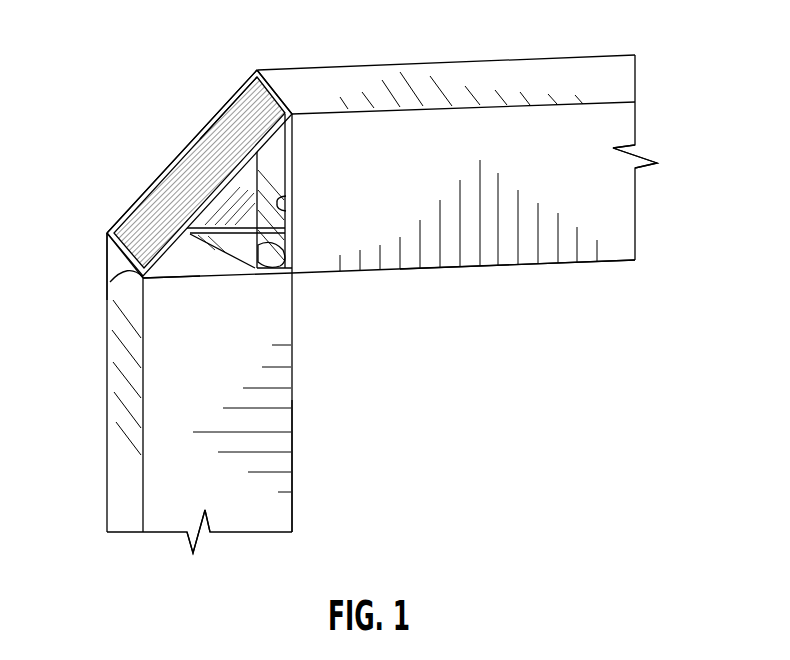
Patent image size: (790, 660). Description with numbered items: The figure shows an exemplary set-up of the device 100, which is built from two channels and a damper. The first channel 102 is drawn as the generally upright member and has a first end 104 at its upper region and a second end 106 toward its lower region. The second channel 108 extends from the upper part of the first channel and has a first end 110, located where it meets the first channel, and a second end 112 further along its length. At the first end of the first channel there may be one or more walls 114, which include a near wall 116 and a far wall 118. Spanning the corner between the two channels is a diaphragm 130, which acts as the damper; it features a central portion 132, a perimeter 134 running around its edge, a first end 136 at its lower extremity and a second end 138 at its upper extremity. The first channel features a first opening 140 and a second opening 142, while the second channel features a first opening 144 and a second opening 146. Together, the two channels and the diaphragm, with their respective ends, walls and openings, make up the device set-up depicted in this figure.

The device 100 is at (342, 66).
The first channel 102 is at (282, 417).
The first end 104 is at (185, 317).
The second end 106 is at (278, 503).
The second channel 108 is at (493, 242).
The first end 110 is at (295, 155).
The second end 112 is at (597, 192).
The walls 114 is at (180, 279).
The near wall 116 is at (292, 248).
The far wall 118 is at (110, 282).
The diaphragm 130 is at (167, 193).
The central portion 132 is at (202, 128).
The perimeter 134 is at (233, 95).
The first end 136 is at (117, 252).
The second end 138 is at (270, 72).
The first opening 140 is at (223, 247).
The second opening 142 is at (242, 533).
The first opening 144 is at (293, 210).
The second opening 146 is at (637, 120).